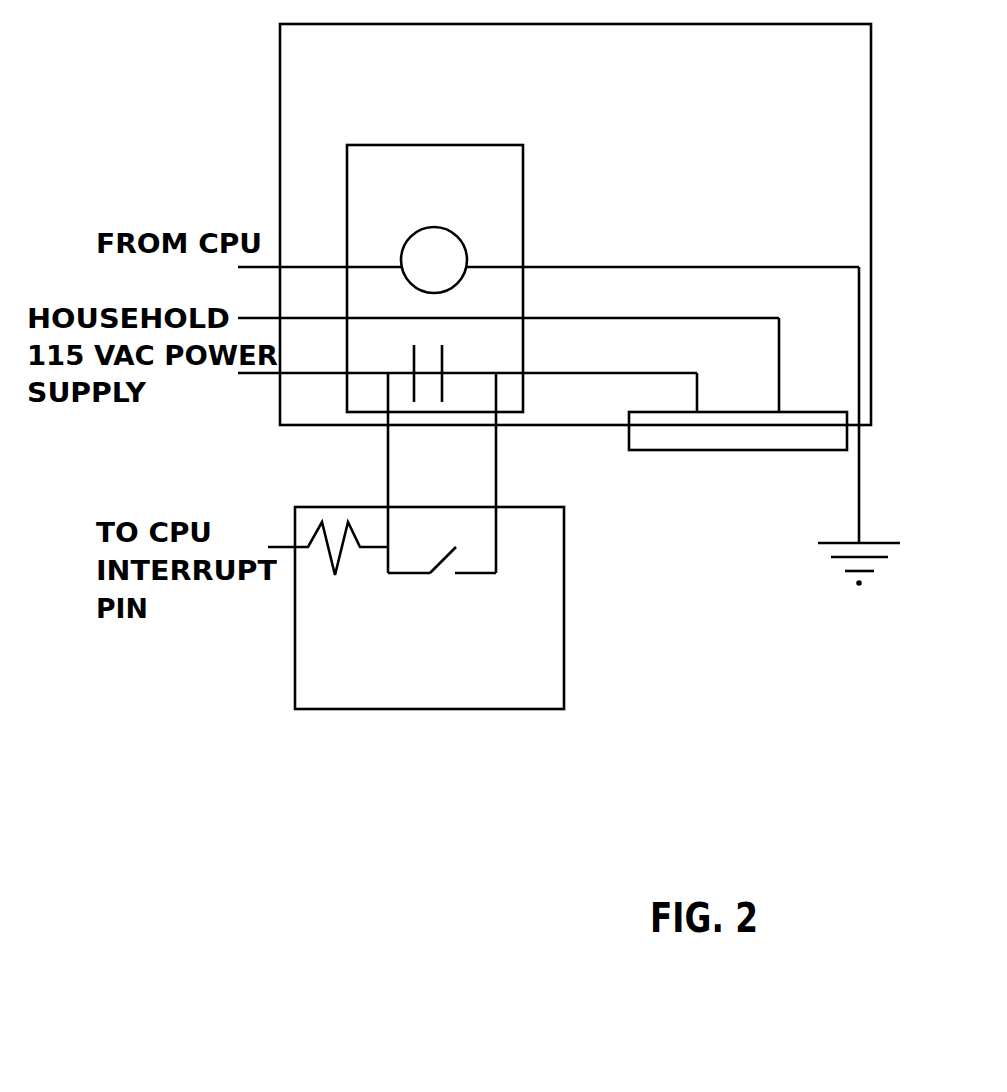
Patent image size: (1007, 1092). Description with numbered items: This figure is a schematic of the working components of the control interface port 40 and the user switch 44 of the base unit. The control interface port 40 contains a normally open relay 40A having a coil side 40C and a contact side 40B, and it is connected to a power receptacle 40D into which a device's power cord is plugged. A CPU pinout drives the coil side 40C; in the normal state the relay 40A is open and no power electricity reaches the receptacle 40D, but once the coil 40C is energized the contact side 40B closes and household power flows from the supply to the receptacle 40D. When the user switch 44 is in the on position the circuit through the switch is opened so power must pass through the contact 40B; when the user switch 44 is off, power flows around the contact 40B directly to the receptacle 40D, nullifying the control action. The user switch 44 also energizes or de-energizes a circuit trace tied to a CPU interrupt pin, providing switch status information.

The control interface port 40 is at (727, 112).
The relay 40A is at (519, 189).
The contact side of the relay 40B is at (456, 344).
The coil side of the relay 40C is at (490, 228).
The power receptacle 40D is at (756, 521).
The user switch 44 is at (548, 656).